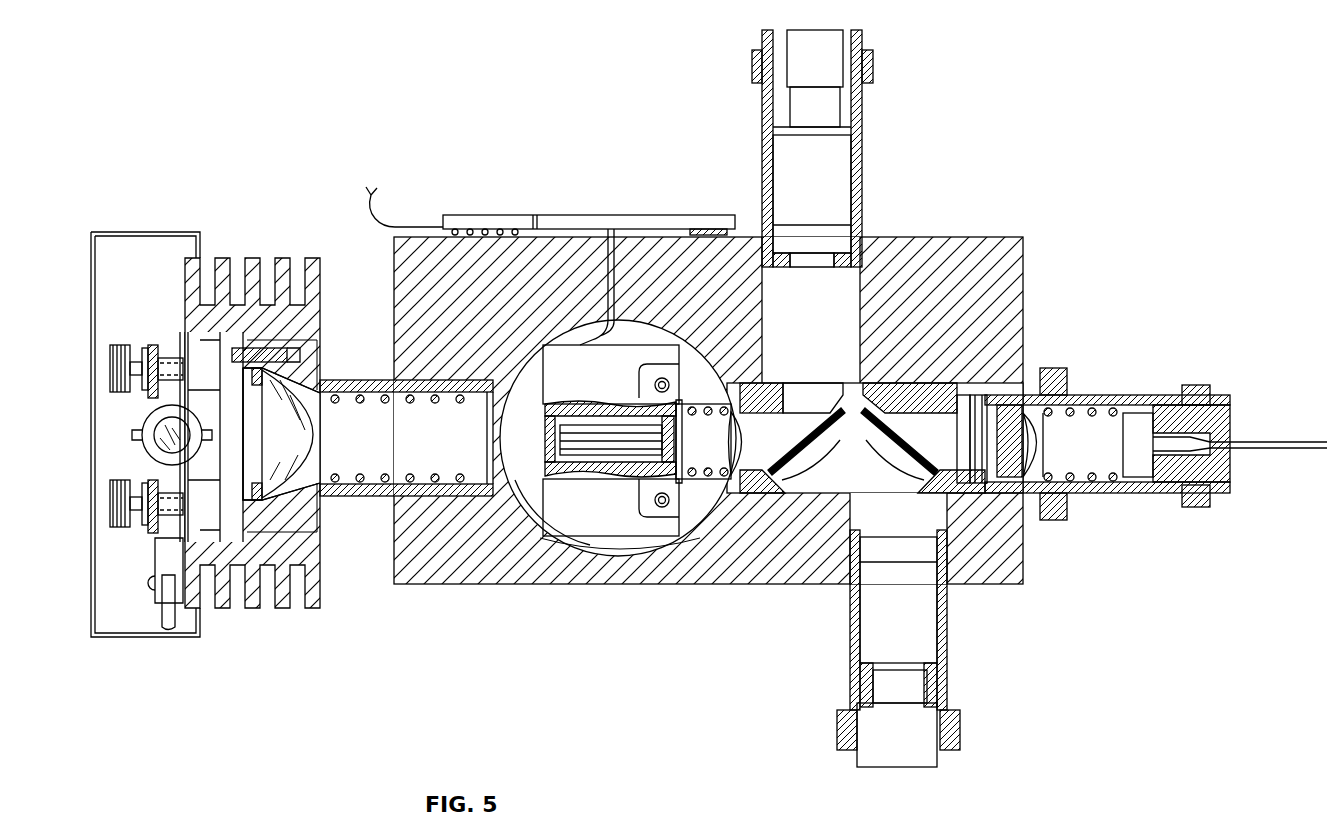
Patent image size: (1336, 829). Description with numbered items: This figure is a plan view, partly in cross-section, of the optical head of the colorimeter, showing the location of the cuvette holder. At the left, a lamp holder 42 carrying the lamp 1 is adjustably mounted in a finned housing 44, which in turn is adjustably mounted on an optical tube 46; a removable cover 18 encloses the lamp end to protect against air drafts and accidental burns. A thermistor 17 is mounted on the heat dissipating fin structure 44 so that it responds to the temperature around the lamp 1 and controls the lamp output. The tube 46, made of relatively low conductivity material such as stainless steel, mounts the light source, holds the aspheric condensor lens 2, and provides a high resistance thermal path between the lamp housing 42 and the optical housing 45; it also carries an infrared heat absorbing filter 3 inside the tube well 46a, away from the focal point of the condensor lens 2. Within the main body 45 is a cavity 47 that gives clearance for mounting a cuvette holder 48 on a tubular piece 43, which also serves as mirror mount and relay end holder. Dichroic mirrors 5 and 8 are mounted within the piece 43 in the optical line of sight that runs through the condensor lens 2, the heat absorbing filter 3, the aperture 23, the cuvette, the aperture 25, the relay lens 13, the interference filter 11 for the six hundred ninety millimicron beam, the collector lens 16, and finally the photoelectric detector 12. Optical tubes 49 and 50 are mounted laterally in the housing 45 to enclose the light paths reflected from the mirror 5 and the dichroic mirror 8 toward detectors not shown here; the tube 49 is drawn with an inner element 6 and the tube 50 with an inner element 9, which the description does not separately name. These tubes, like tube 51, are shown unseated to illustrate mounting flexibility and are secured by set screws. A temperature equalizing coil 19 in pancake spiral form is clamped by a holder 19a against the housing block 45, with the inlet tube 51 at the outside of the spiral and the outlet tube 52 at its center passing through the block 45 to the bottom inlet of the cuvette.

The lamp 1 is at (150, 430).
The aspheric condensor lens 2 is at (302, 432).
The infrared heat absorbing filter 3 is at (348, 412).
The dichroic mirror 5 is at (806, 453).
The sample passage 6 is at (807, 237).
The dichroic mirror 8 is at (908, 456).
The outlet passage 9 is at (898, 558).
The interference filter 11 is at (1023, 532).
The photoelectric detector 12 is at (1128, 395).
The relay lens 13 is at (742, 482).
The collector lens 16 is at (1045, 440).
The thermistor 17 is at (155, 594).
The removable cover 18 is at (155, 232).
The temperature equalizing coil 19 is at (654, 216).
The holder 19a is at (694, 230).
The aperture 23 is at (515, 520).
The aperture 25 is at (668, 436).
The lamp holder 42 is at (157, 345).
The tubular piece 43 is at (738, 498).
The finned housing 44 is at (317, 592).
The optical housing 45 is at (395, 242).
The optical tube 46 is at (340, 380).
The tube well 46a is at (396, 488).
The cavity 47 is at (568, 332).
The cuvette holder 48 is at (535, 584).
The optical tube 49 is at (863, 130).
The optical tube 50 is at (948, 692).
The inlet tube 51 is at (380, 208).
The outlet tube 52 is at (605, 345).